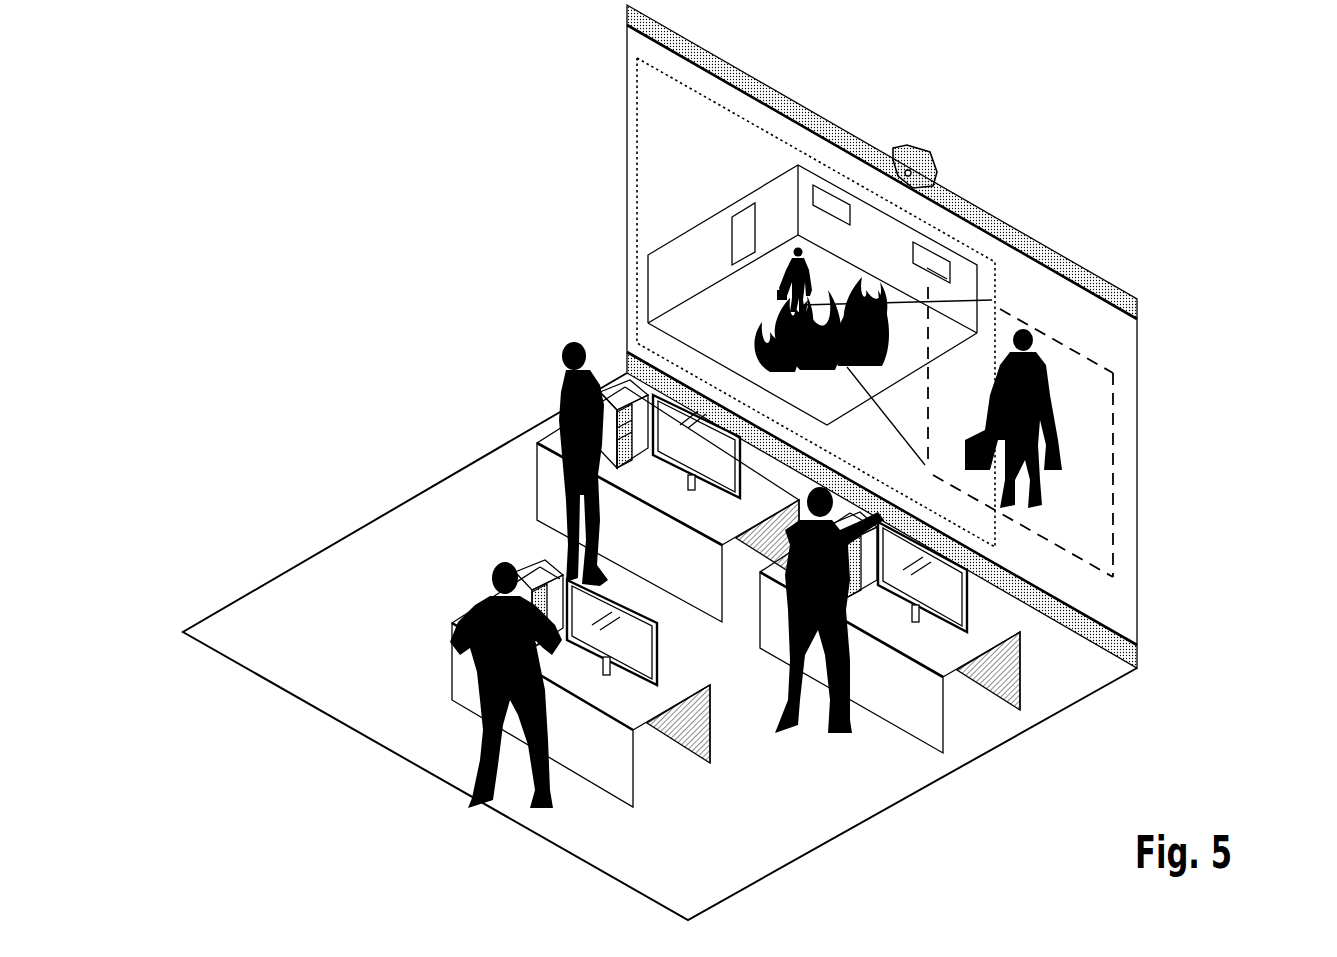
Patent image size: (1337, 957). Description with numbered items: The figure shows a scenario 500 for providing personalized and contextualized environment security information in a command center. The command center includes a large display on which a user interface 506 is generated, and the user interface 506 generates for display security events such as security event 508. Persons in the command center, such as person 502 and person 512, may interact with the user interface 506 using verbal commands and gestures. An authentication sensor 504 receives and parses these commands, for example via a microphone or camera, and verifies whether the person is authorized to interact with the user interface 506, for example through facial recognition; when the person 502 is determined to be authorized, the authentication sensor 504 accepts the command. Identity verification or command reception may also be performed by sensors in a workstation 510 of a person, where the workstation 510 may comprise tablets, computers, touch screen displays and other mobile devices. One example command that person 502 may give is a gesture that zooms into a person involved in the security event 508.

The scenario 500 is at (417, 210).
The person 502 is at (850, 722).
The authentication sensor 504 is at (933, 156).
The user interface 506 is at (1080, 313).
The security event 508 is at (957, 268).
The workstation 510 is at (950, 577).
The person 512 is at (563, 388).